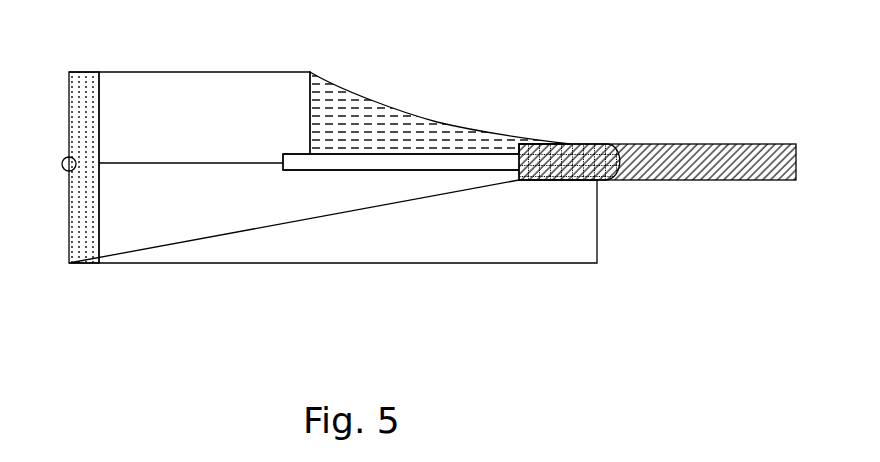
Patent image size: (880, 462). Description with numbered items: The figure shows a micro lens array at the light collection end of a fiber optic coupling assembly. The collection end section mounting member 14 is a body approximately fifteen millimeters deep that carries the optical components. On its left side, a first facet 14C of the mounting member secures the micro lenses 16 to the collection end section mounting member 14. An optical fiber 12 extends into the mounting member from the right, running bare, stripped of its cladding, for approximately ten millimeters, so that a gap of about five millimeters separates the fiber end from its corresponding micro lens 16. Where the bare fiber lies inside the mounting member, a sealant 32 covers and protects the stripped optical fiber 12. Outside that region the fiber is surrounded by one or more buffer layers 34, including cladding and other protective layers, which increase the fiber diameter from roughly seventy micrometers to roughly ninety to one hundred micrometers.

The optical fiber 12 is at (419, 146).
The collection end section mounting member 14 is at (198, 72).
The first facet 14C is at (99, 232).
The micro lens 16 is at (83, 71).
The sealant 32 is at (374, 107).
The buffer layer 34 is at (659, 120).